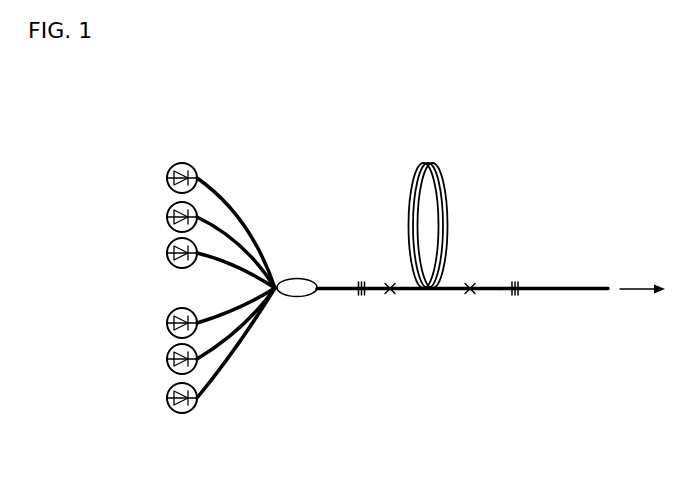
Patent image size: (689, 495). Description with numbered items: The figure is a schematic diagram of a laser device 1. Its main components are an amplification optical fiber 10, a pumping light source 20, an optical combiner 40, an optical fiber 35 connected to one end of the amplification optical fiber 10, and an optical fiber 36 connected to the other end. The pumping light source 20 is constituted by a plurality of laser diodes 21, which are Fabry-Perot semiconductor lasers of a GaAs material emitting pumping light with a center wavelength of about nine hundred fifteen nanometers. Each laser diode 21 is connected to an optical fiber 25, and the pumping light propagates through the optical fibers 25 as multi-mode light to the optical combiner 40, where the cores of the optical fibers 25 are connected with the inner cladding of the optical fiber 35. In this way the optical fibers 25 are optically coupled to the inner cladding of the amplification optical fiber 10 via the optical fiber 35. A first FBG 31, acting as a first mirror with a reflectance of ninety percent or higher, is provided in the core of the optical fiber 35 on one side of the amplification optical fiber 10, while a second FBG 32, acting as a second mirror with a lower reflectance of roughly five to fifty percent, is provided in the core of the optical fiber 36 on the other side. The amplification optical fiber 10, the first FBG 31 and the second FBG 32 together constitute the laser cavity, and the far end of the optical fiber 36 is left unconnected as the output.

The laser device 1 is at (591, 142).
The amplification optical fiber 10 is at (448, 287).
The pumping light source 20 is at (161, 141).
The laser diode 21 is at (167, 178).
The optical fiber 25 is at (220, 260).
The first FBG 31 is at (367, 292).
The second FBG 32 is at (517, 292).
The optical fiber 35 is at (332, 287).
The optical fiber 36 is at (538, 288).
The optical combiner 40 is at (300, 293).